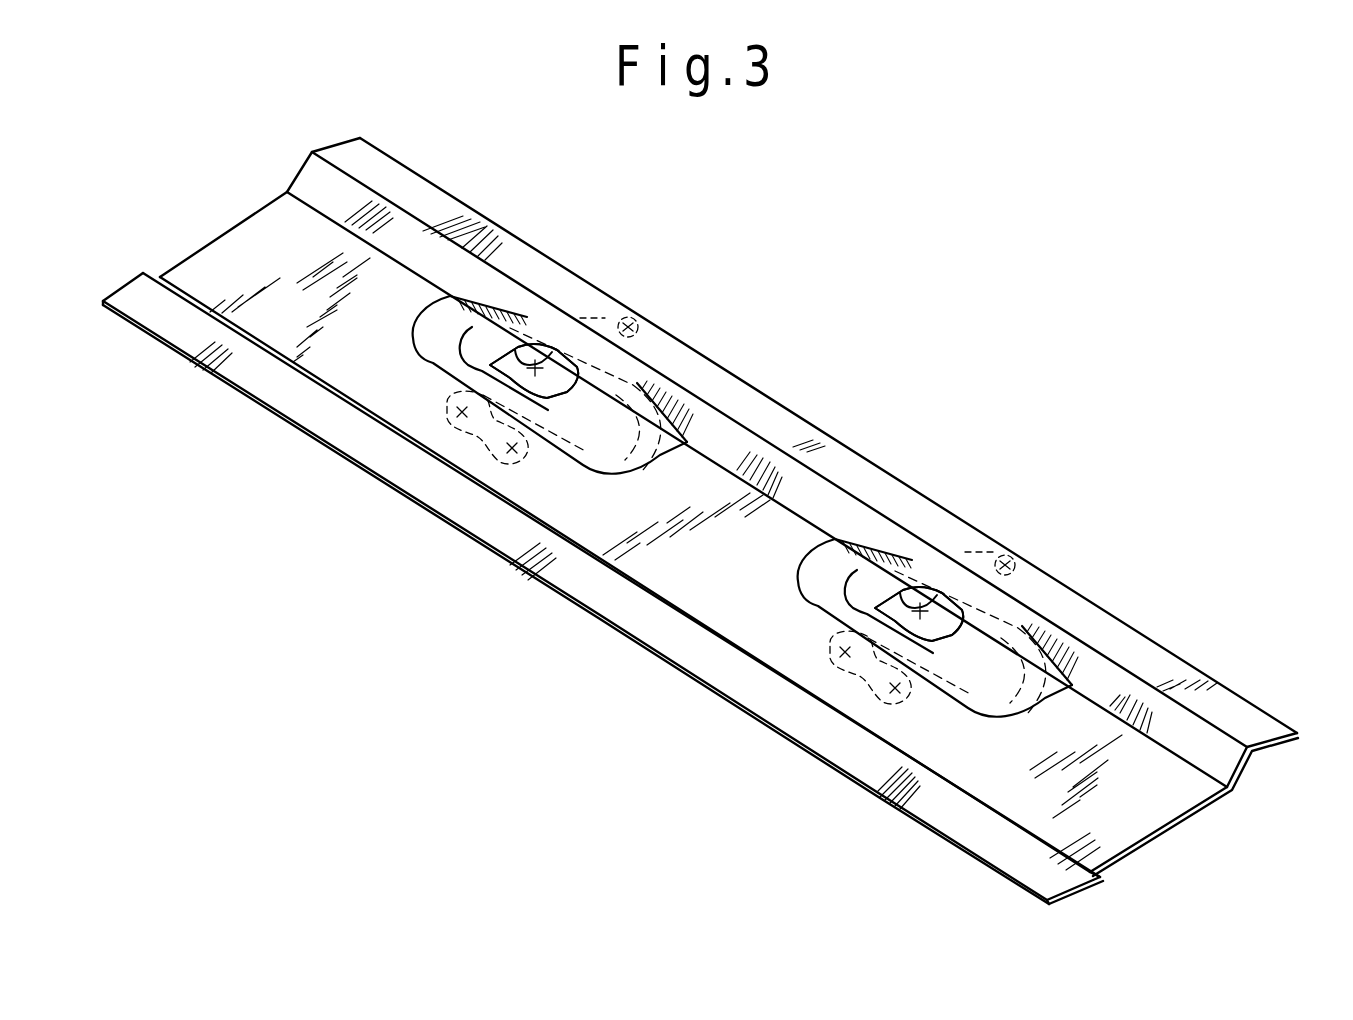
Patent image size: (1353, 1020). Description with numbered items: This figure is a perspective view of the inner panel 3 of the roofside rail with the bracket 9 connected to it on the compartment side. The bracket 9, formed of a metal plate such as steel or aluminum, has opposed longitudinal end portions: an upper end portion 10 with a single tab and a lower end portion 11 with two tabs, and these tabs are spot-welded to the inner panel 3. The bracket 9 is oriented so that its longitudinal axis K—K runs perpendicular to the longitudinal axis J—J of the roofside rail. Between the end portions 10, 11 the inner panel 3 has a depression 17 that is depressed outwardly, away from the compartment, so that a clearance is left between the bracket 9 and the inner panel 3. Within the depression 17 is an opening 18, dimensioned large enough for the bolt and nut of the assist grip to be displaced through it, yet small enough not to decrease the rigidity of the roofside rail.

The inner panel 3 is at (423, 197).
The bracket 9 is at (590, 316).
The upper end portion 10 is at (616, 314).
The lower end portion 11 is at (487, 435).
The depression 17 is at (433, 363).
The opening 18 is at (516, 362).
The longitudinal axis of the roofside rail J is at (215, 237).
The longitudinal axis of the bracket K is at (640, 313).